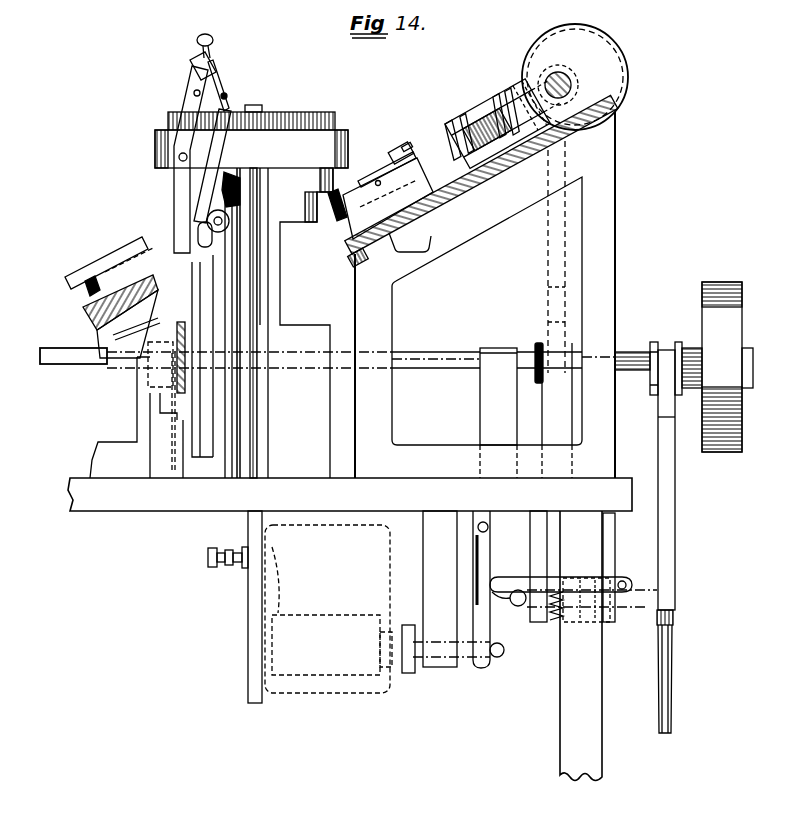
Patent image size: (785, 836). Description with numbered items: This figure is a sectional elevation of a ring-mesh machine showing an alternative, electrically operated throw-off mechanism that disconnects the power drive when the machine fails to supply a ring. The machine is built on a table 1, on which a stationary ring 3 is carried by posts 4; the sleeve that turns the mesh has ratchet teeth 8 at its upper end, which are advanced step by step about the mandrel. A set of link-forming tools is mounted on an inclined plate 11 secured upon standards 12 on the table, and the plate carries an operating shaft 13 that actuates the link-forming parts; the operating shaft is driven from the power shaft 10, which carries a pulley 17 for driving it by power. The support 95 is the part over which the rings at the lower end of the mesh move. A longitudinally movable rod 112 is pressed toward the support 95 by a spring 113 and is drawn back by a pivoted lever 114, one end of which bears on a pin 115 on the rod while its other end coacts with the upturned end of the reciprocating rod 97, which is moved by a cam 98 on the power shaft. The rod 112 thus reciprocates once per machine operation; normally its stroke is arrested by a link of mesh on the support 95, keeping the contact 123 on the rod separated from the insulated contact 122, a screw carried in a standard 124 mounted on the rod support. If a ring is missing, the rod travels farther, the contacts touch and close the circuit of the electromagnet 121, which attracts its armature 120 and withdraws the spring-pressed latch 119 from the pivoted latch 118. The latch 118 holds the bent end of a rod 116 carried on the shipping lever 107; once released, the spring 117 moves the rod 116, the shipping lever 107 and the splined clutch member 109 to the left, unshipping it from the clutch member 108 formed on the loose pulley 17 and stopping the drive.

The table 1 is at (150, 500).
The stationary ring 3 is at (327, 143).
The posts 4 is at (255, 285).
The ratchet teeth 8 is at (337, 120).
The power shaft 10 is at (443, 357).
The plate 11 is at (487, 180).
The standards 12 is at (607, 233).
The operating shaft 13 is at (572, 82).
The pulley 17 is at (718, 440).
The support 95 is at (230, 247).
The reciprocating rod 97 is at (158, 418).
The cam 98 is at (123, 362).
The shipping lever 107 is at (677, 543).
The clutch member 108 is at (700, 347).
The clutch member 109 is at (655, 342).
The longitudinally movable rod 112 is at (242, 197).
The spring 113 is at (232, 183).
The pivoted lever 114 is at (186, 112).
The pin 115 is at (195, 92).
The rod 116 is at (646, 605).
The spring 117 is at (608, 610).
The pivoted latch 118 is at (510, 577).
The spring-pressed latch 119 is at (486, 626).
The armature 120 is at (407, 673).
The electromagnet 121 is at (328, 609).
The contact 122 is at (217, 78).
The contact 123 is at (213, 70).
The standard 124 is at (225, 93).